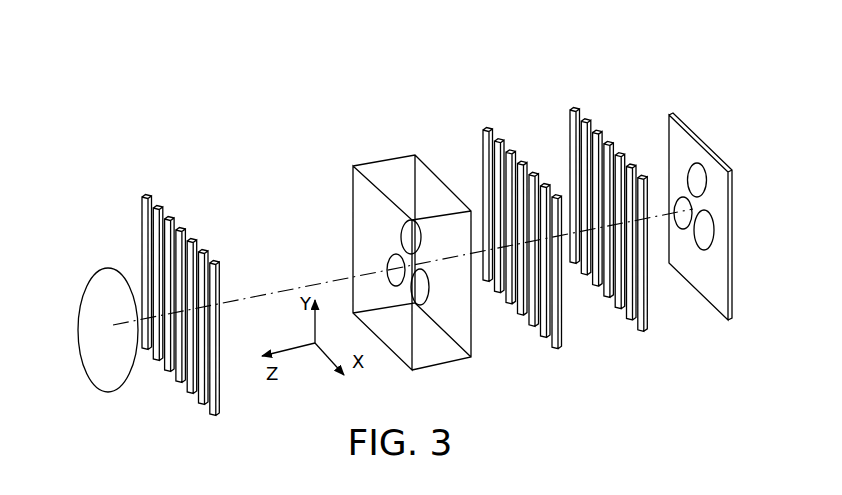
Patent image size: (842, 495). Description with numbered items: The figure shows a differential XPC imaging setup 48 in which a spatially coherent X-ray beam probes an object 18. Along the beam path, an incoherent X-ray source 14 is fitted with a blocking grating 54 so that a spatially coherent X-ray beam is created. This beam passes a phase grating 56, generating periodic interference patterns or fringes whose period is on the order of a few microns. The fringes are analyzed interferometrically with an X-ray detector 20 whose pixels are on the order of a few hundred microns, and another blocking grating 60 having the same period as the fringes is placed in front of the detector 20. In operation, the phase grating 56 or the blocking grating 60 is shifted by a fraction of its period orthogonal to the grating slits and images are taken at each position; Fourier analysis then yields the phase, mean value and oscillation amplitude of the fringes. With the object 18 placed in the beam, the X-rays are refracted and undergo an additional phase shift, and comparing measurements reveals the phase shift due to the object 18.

The incoherent X-ray source 14 is at (97, 268).
The object 18 is at (400, 140).
The X-ray detector 20 is at (677, 100).
The differential XPC imaging setup 48 is at (472, 43).
The blocking grating 54 is at (148, 187).
The phase grating 56 is at (488, 118).
The blocking grating 60 is at (578, 100).